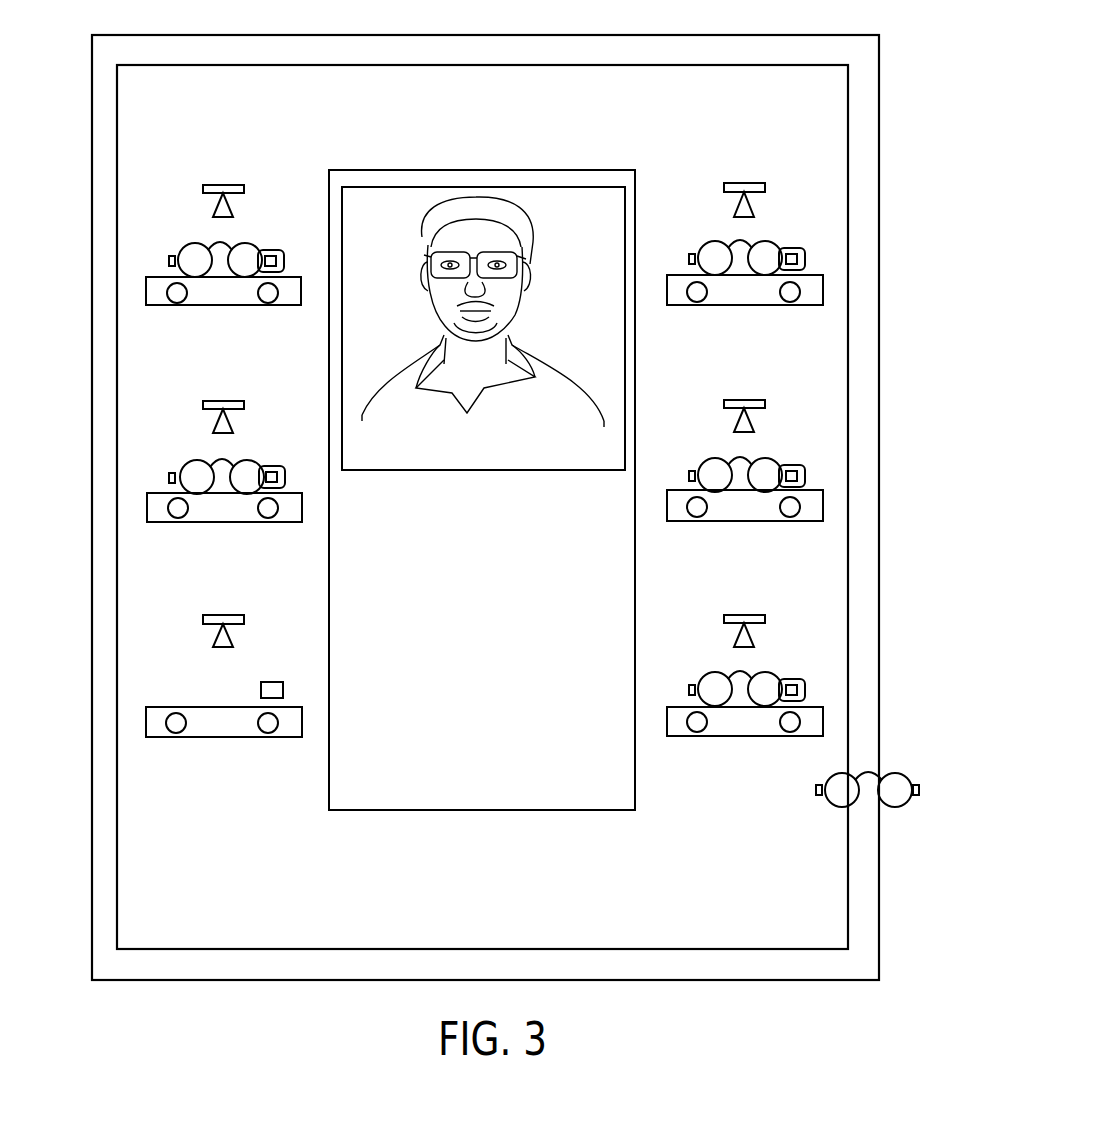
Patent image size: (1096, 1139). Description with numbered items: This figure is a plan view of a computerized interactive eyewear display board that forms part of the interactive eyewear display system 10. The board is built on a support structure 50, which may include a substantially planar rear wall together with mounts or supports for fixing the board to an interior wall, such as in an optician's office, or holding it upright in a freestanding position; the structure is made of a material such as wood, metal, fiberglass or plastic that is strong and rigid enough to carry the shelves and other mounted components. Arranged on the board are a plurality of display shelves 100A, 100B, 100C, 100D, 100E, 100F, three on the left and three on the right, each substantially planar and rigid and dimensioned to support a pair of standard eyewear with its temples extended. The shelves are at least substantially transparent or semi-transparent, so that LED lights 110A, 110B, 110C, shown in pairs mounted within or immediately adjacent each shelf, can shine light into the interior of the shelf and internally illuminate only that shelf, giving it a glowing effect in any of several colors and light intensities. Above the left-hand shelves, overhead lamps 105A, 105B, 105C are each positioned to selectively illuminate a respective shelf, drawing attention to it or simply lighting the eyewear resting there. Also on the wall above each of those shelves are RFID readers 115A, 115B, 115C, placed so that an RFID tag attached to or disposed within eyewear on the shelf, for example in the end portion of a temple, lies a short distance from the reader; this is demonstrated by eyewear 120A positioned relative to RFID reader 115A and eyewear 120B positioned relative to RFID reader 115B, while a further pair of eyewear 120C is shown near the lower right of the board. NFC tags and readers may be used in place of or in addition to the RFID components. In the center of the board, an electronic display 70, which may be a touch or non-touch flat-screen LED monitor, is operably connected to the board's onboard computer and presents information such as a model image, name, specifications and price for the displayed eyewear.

The interactive eyewear display system 10 is at (865, 150).
The support structure 50 is at (828, 207).
The electronic display 70 is at (568, 170).
The display shelf 100A is at (150, 285).
The display shelf 100B is at (152, 502).
The display shelf 100C is at (152, 718).
The display shelf 100D is at (815, 290).
The display shelf 100E is at (815, 506).
The display shelf 100F is at (815, 721).
The overhead lamp 105A is at (203, 188).
The overhead lamp 105B is at (203, 404).
The overhead lamp 105C is at (203, 619).
The LED light 110A is at (177, 304).
The LED light 110B is at (178, 519).
The LED light 110C is at (176, 734).
The RFID reader 115A is at (272, 250).
The RFID reader 115B is at (272, 466).
The RFID reader 115C is at (272, 682).
The eyewear 120A is at (178, 253).
The eyewear 120B is at (180, 470).
The eyewear 120C is at (838, 805).